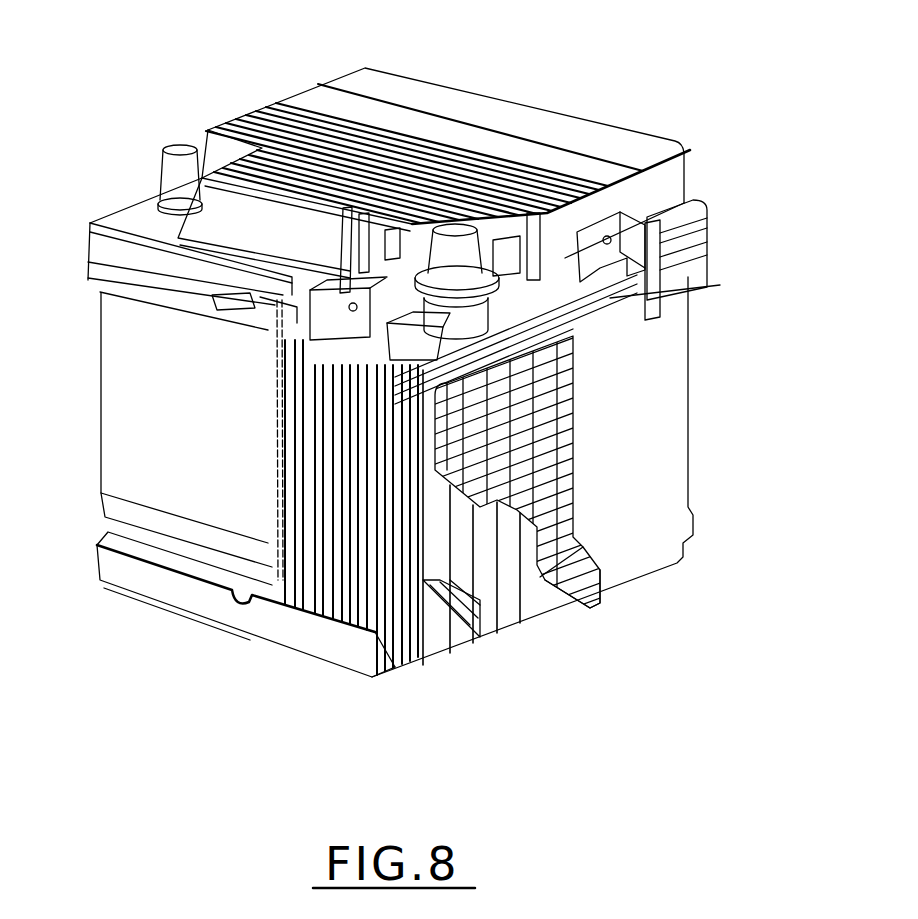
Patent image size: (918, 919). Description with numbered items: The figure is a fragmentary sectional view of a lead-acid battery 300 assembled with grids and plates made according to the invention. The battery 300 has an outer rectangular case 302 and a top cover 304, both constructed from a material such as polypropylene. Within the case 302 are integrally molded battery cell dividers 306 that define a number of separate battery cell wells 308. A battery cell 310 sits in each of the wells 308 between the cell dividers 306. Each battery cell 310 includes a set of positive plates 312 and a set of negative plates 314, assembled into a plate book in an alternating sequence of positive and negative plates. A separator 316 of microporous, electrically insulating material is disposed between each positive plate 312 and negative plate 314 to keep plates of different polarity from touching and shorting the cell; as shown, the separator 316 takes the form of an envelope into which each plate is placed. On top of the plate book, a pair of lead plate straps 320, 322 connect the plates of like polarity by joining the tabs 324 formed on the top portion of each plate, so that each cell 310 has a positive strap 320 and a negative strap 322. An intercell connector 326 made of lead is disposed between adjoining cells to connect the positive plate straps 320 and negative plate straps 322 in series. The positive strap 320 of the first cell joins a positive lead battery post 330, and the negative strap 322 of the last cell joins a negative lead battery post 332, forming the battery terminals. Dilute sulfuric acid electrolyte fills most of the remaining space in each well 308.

The lead-acid battery 300 is at (714, 64).
The outer rectangular case 302 is at (680, 381).
The top cover 304 is at (120, 213).
The battery cell dividers 306 is at (280, 337).
The battery cell wells 308 is at (655, 335).
The battery cell 310 is at (568, 618).
The positive plates 312 is at (447, 637).
The negative plates 314 is at (575, 586).
The separator 316 is at (507, 623).
The positive plate strap 320 is at (440, 350).
The negative plate strap 322 is at (395, 232).
The tabs 324 is at (327, 370).
The intercell connector 326 is at (355, 307).
The positive lead battery post 330 is at (460, 227).
The negative lead battery post 332 is at (165, 150).